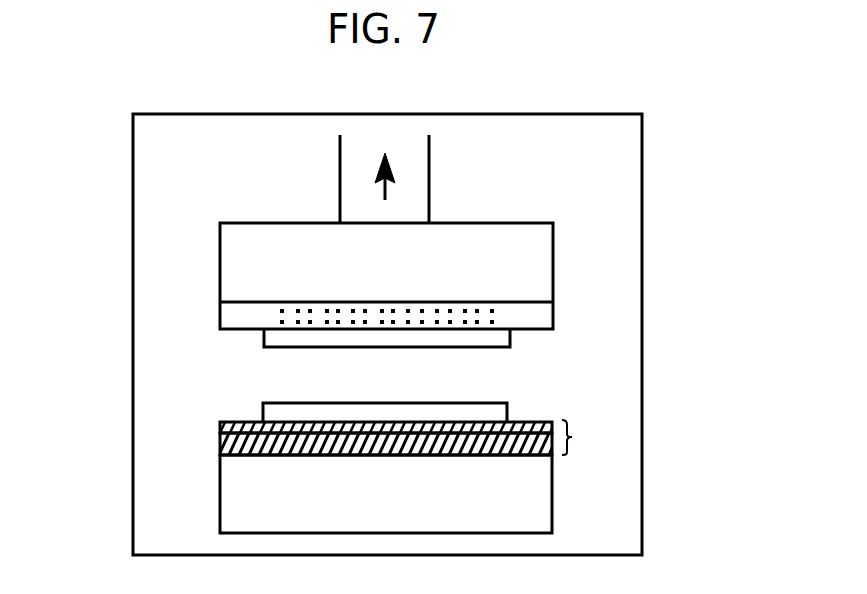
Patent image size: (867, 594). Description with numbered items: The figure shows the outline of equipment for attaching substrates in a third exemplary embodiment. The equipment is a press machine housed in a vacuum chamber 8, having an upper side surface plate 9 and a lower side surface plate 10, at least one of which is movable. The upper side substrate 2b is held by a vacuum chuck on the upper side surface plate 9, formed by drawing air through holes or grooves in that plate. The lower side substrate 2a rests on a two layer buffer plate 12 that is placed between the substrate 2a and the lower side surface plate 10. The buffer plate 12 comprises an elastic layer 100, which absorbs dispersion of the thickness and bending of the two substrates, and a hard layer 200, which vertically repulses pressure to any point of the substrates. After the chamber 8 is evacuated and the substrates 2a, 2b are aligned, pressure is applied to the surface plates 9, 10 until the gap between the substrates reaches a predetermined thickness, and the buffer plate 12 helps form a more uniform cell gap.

The vacuum chamber 8 is at (574, 157).
The upper side surface plate 9 is at (527, 249).
The substrate 2b is at (502, 335).
The substrate 2a is at (496, 412).
The two layer buffer plate 12 is at (583, 438).
The hard layer 200 is at (218, 428).
The elastic layer 100 is at (218, 453).
The lower side surface plate 10 is at (532, 497).